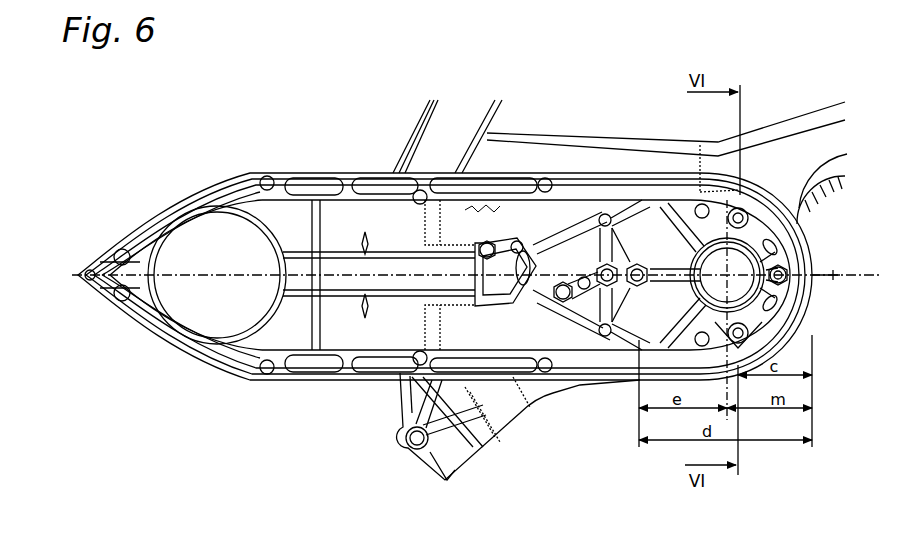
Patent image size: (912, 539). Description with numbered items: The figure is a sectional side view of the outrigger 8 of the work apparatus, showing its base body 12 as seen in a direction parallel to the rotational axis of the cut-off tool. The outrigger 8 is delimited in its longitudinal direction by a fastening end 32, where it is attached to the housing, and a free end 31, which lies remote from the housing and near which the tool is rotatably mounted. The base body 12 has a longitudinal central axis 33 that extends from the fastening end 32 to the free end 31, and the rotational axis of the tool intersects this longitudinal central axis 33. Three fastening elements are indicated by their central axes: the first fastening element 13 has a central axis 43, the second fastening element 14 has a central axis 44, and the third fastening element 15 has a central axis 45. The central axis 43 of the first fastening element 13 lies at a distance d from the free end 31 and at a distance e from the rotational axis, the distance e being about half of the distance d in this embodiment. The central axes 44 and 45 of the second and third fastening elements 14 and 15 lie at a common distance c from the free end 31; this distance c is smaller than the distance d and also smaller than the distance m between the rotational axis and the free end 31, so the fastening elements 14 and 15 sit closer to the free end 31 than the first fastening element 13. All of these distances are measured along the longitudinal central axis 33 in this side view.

The outrigger 8 is at (257, 171).
The base body 12 is at (484, 239).
The fastening end 32 is at (80, 272).
The central axis 43 is at (604, 262).
The first fastening element 13 is at (636, 263).
The central axis 45 is at (748, 208).
The third fastening element 15 is at (750, 218).
The free end 31 is at (814, 275).
The longitudinal central axis 33 is at (833, 276).
The central axis 44 is at (748, 330).
The second fastening element 14 is at (755, 340).